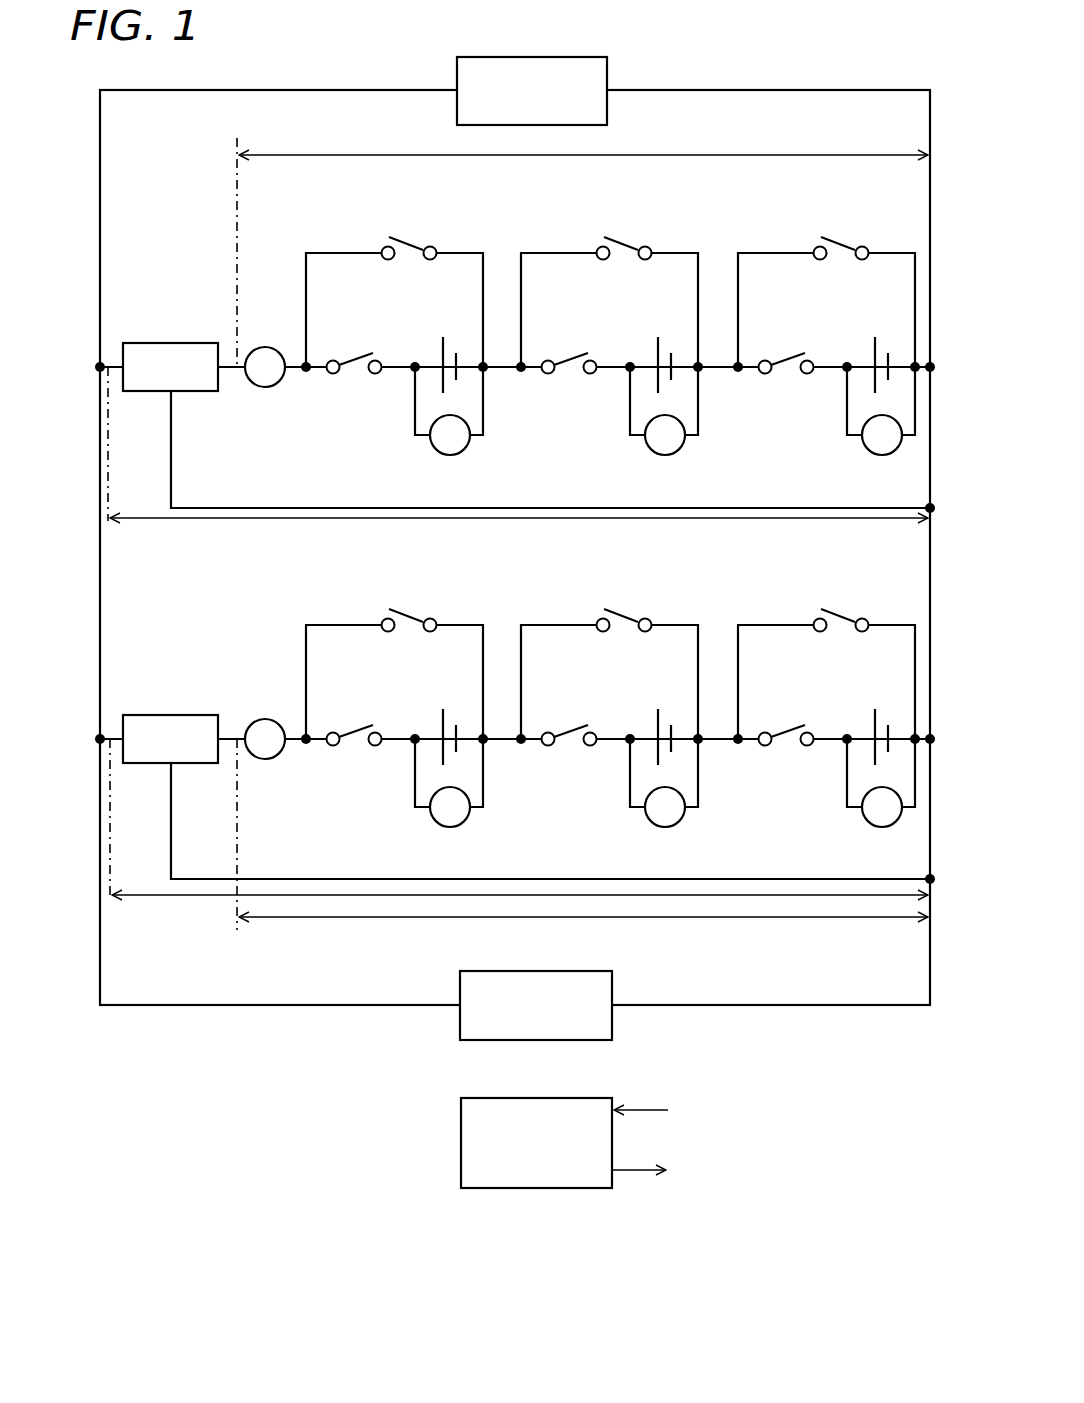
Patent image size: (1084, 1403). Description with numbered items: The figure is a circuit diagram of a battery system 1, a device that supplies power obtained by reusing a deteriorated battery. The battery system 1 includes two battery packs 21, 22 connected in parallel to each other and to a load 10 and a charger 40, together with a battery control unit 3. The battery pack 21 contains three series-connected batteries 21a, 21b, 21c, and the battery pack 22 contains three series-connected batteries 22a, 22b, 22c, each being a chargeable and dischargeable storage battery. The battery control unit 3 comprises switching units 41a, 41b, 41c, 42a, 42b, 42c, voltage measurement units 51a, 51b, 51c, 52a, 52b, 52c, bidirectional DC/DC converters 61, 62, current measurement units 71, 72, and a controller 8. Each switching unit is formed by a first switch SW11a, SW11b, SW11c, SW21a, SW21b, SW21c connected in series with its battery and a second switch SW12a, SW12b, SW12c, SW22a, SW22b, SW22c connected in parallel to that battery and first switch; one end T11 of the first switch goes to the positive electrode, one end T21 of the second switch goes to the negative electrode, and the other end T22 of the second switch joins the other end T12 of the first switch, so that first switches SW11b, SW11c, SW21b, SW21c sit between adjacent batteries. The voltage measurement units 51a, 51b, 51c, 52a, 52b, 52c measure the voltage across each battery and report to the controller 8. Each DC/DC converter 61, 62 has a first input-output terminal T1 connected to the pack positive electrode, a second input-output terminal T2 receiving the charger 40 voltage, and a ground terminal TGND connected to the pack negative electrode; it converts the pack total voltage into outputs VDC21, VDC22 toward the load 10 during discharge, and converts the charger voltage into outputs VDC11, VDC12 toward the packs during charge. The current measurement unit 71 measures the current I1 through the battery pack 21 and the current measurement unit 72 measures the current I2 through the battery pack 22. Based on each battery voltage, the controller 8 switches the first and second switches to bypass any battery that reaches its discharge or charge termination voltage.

The battery system 1 is at (808, 69).
The battery control unit 3 is at (202, 236).
The controller 8 is at (572, 1097).
The load 10 is at (591, 970).
The charger 40 is at (588, 57).
The bidirectional DC/DC converter 61 is at (163, 342).
The bidirectional DC/DC converter 62 is at (163, 714).
The current measurement unit 71 is at (262, 346).
The current measurement unit 72 is at (262, 718).
The battery pack 21 is at (109, 1122).
The battery pack 22 is at (218, 1122).
The battery 21a is at (440, 352).
The battery 21b is at (655, 353).
The battery 21c is at (872, 353).
The battery 22a is at (440, 724).
The battery 22b is at (655, 725).
The battery 22c is at (872, 725).
The voltage measurement unit 51a is at (435, 450).
The voltage measurement unit 51b is at (650, 450).
The voltage measurement unit 51c is at (867, 450).
The voltage measurement unit 52a is at (435, 822).
The voltage measurement unit 52b is at (650, 822).
The voltage measurement unit 52c is at (867, 822).
The first switch SW11a is at (352, 358).
The first switch SW11b is at (567, 358).
The first switch SW11c is at (784, 358).
The second switch SW12a is at (411, 238).
The second switch SW12b is at (626, 238).
The second switch SW12c is at (843, 238).
The first switch SW21a is at (352, 730).
The first switch SW21b is at (567, 730).
The first switch SW21c is at (784, 730).
The second switch SW22a is at (411, 610).
The second switch SW22b is at (626, 610).
The second switch SW22c is at (843, 610).
The switching unit 41a is at (132, 1210).
The switching unit 41b is at (132, 1266).
The switching unit 41c is at (132, 1323).
The switching unit 42a is at (281, 1210).
The switching unit 42b is at (281, 1266).
The switching unit 42c is at (281, 1323).
The first input-output terminal T1 is at (223, 364).
The second input-output terminal T2 is at (122, 366).
The one end of first switch T11 is at (377, 374).
The other end of first switch T12 is at (306, 373).
The one end of second switch T21 is at (446, 252).
The other end of second switch T22 is at (364, 252).
The ground terminal TGND is at (176, 392).
The current I1 is at (255, 407).
The current I2 is at (255, 785).
The output VDC11 is at (706, 154).
The output VDC12 is at (359, 918).
The output VDC21 is at (523, 517).
The output VDC22 is at (520, 879).